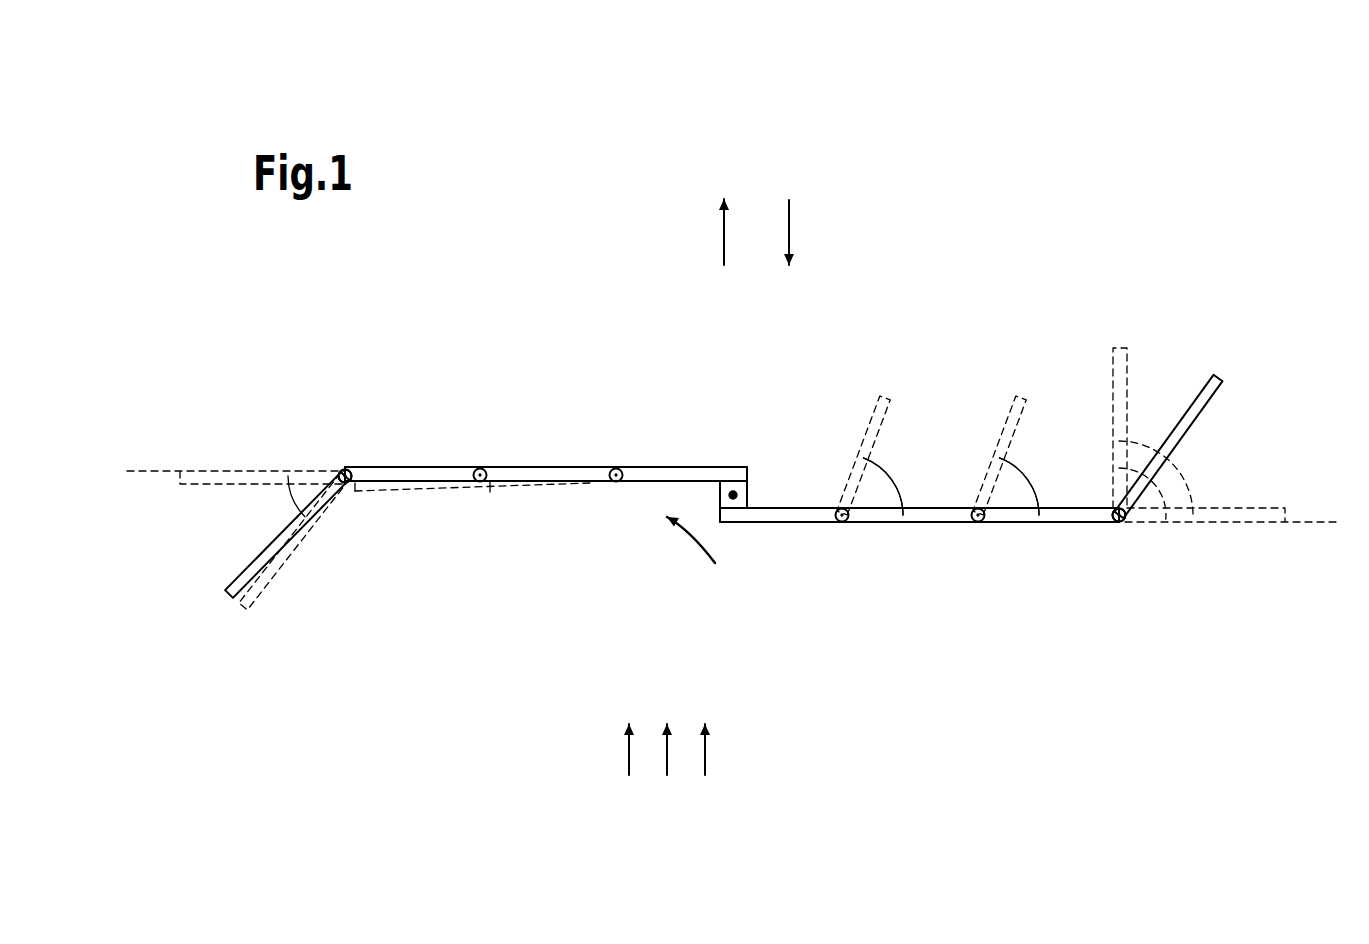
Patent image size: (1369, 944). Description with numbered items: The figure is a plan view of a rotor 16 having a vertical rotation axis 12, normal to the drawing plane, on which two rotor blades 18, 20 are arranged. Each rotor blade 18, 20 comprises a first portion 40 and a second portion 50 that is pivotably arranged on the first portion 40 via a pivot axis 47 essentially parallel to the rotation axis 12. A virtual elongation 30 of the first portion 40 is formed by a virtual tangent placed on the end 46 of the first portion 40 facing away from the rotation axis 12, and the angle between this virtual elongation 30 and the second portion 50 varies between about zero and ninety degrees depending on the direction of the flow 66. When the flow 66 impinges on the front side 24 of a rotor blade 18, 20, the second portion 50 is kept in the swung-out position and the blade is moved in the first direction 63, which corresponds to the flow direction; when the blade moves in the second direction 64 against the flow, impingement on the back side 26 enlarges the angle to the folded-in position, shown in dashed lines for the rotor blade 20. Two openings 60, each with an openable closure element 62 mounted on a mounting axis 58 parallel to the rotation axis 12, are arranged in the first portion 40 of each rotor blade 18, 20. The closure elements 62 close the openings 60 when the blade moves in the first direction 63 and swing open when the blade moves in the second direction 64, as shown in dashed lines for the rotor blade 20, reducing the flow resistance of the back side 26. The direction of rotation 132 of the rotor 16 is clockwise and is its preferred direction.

The rotation axis 12 is at (748, 498).
The rotor 16 is at (571, 644).
The rotor blade 18 is at (588, 396).
The rotor blade 20 is at (928, 606).
The front side 24 is at (393, 490).
The back side 26 is at (530, 467).
The virtual elongation 30 is at (143, 470).
The first portion 40 is at (689, 465).
The end of the first portion 46 is at (352, 464).
The pivot axis 47 is at (340, 470).
The second portion 50 is at (294, 548).
The mounting axis 58 is at (478, 469).
The opening 60 is at (918, 504).
The closure element 62 is at (868, 420).
The first direction 63 is at (722, 233).
The second direction 64 is at (789, 233).
The flow 66 is at (705, 752).
The direction of rotation 132 is at (687, 553).